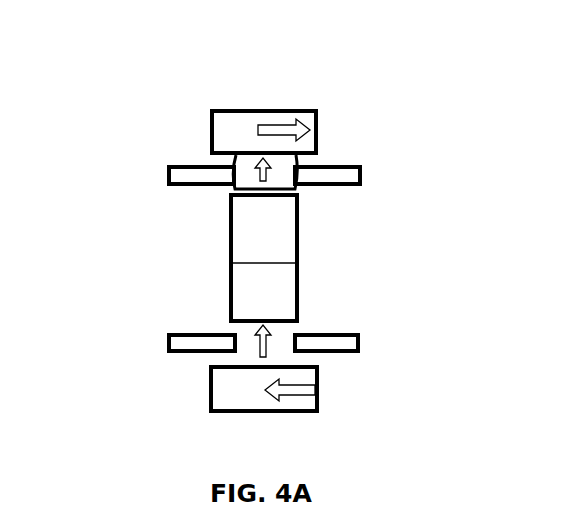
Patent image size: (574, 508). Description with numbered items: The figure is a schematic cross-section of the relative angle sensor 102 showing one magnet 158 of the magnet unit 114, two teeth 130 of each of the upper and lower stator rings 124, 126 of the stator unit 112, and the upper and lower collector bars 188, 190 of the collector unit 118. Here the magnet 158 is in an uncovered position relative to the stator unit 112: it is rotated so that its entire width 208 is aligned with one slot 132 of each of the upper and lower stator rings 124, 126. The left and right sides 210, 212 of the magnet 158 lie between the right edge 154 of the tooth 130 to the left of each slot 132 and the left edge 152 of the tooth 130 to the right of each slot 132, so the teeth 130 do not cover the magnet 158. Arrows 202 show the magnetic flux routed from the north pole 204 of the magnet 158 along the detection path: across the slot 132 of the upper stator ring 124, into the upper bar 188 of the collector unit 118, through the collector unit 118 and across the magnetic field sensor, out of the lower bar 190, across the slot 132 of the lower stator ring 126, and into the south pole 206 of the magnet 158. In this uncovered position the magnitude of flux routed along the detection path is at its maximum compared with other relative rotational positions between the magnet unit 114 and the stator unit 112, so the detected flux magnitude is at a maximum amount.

The relative angle sensor 102 is at (118, 129).
The stator unit 112 is at (372, 177).
The magnet unit 114 is at (212, 269).
The collector unit 118 is at (329, 102).
The upper stator ring 124 is at (160, 175).
The lower stator ring 126 is at (160, 345).
The tooth 130 is at (346, 168).
The slot 132 is at (284, 160).
The left edge 152 is at (303, 156).
The right edge 154 is at (213, 153).
The magnet 158 is at (239, 250).
The upper collector bar 188 is at (228, 108).
The lower collector bar 190 is at (246, 415).
The arrows 202 is at (279, 121).
The north pole 204 is at (279, 233).
The south pole 206 is at (279, 294).
The width 208 is at (236, 152).
The left side 210 is at (233, 284).
The right side 212 is at (300, 246).